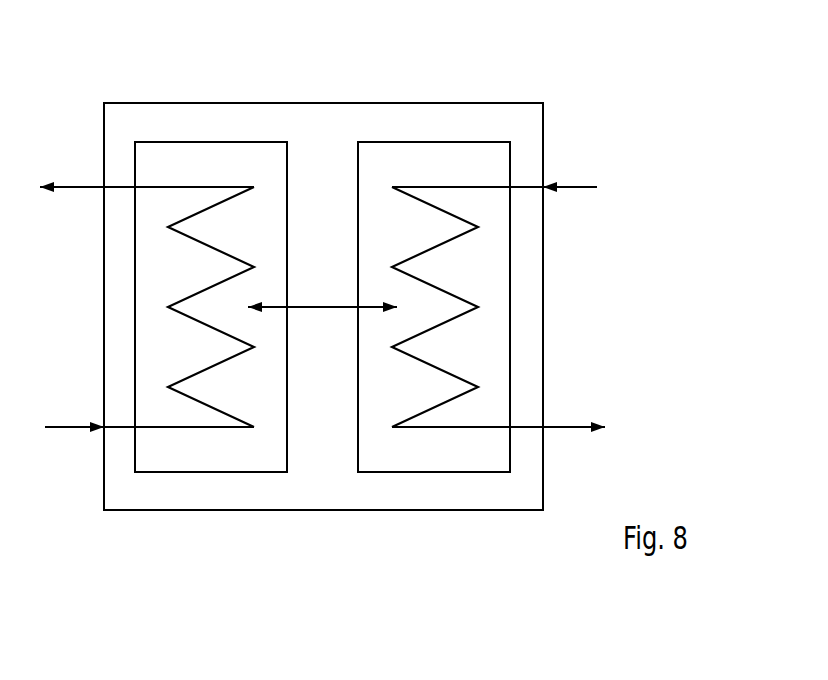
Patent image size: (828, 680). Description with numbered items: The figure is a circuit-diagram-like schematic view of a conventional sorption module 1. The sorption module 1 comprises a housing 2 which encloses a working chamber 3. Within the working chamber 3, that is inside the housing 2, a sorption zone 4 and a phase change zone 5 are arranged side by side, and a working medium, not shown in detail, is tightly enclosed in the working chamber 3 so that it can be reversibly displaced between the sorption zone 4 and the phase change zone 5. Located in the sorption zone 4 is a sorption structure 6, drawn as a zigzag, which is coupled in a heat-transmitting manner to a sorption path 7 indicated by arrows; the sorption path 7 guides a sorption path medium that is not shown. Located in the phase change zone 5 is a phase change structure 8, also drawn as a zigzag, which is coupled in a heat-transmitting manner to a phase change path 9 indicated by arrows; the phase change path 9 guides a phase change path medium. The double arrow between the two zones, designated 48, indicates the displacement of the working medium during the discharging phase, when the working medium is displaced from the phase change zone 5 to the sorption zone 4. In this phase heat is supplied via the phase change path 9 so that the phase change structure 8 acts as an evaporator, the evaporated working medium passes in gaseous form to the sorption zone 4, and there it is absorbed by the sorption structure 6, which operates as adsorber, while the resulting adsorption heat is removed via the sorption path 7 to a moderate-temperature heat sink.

The sorption module 1 is at (630, 143).
The housing 2 is at (325, 91).
The working chamber 3 is at (315, 192).
The sorption zone 4 is at (214, 130).
The phase change zone 5 is at (439, 130).
The sorption structure 6 is at (179, 153).
The sorption path 7 is at (200, 290).
The phase change structure 8 is at (475, 153).
The phase change path 9 is at (447, 290).
The displacement of the working medium 48 is at (322, 305).